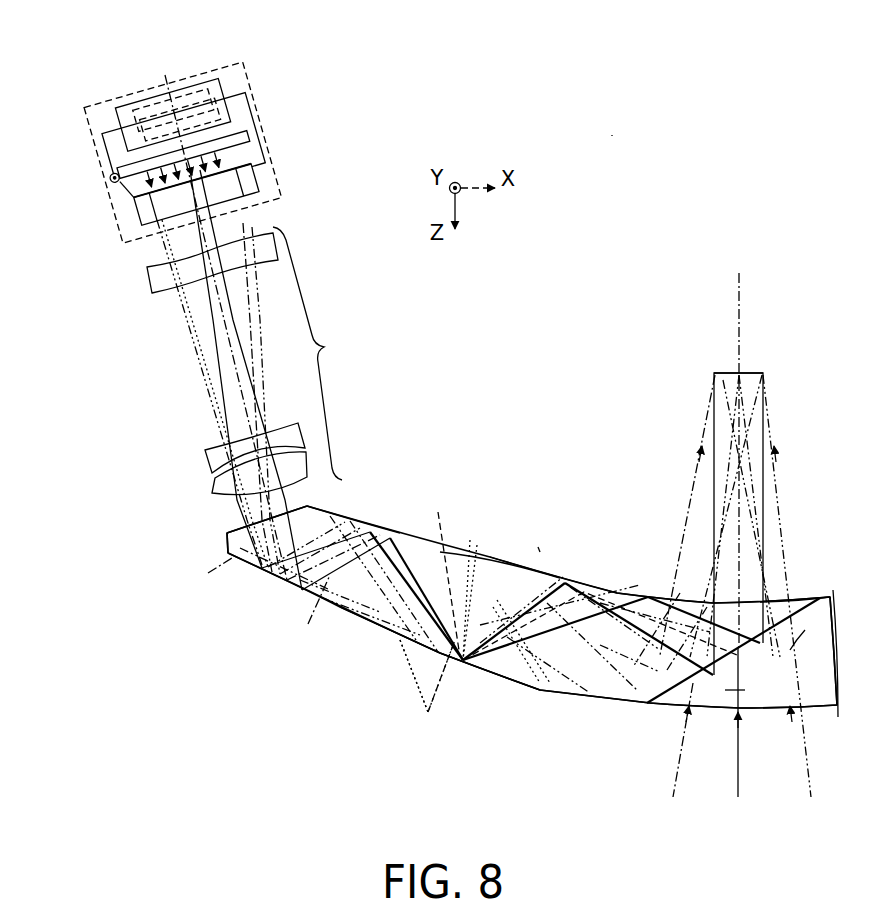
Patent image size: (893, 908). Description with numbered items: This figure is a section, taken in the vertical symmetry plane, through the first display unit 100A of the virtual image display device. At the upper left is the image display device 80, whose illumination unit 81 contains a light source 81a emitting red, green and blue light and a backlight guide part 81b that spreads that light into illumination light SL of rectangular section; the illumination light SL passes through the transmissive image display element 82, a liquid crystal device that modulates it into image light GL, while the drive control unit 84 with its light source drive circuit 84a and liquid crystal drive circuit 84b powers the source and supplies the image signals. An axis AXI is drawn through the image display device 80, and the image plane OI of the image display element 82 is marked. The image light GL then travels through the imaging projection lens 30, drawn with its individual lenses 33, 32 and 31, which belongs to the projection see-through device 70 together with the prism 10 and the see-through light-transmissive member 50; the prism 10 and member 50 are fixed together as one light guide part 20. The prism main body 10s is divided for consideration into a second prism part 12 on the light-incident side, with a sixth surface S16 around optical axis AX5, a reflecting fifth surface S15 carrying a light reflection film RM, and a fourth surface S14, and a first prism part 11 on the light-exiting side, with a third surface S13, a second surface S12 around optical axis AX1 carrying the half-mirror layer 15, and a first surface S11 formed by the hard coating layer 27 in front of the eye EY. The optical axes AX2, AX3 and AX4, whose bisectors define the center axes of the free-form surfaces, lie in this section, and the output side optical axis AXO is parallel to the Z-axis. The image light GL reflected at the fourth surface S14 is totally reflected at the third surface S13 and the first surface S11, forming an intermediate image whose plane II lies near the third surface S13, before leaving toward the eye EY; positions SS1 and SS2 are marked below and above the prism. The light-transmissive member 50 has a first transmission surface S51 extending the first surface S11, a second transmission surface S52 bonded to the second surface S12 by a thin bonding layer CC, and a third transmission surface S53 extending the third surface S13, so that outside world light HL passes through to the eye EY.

The first display unit 100A is at (612, 135).
The image display device 80 is at (258, 76).
The illumination unit 81 is at (96, 171).
The light source 81a is at (110, 180).
The backlight guide part 81b is at (133, 182).
The image display element 82 is at (143, 206).
The drive control unit 84 is at (143, 98).
The light source drive circuit 84a is at (178, 106).
The liquid crystal drive circuit 84b is at (200, 79).
The optical axis of image element AXI is at (255, 121).
The illumination light SL is at (238, 159).
The image plane of the image display element OI is at (254, 169).
The image light GL is at (246, 221).
The imaging projection lens 30 is at (313, 353).
The third lens 33 is at (160, 280).
The second lens 32 is at (213, 461).
The first lens 31 is at (217, 491).
The light guide and see-through prism 10 is at (466, 505).
The prism main body 10s is at (497, 571).
The second prism part 12 is at (347, 601).
The first prism part 11 is at (623, 695).
The half-mirror layer 15 is at (730, 669).
The light guide part 20 is at (363, 691).
The hard coating layer 27 is at (610, 587).
The see-through light-transmissive member 50 is at (800, 699).
The projection see-through device 70 is at (533, 392).
The first surface S11 is at (648, 600).
The second surface S12 is at (678, 697).
The third surface S13 is at (552, 691).
The fourth surface S14 is at (366, 530).
The fifth surface S15 is at (272, 583).
The sixth surface S16 is at (230, 533).
The first transmission surface S51 is at (827, 592).
The second transmission surface S52 is at (798, 600).
The third transmission surface S53 is at (762, 719).
The optical axis AX1 is at (761, 722).
The optical axis AX2 is at (584, 590).
The optical axis AX3 is at (437, 571).
The optical axis AX4 is at (333, 592).
The optical axis AX5 is at (198, 575).
The output side optical axis AXO is at (742, 333).
The image plane of the intermediate image II is at (455, 652).
The first spot SS1 is at (457, 704).
The second spot SS2 is at (538, 548).
The light reflection film RM is at (230, 571).
The eye EY is at (713, 374).
The outside world light HL is at (680, 775).
The bonding layer CC is at (792, 642).